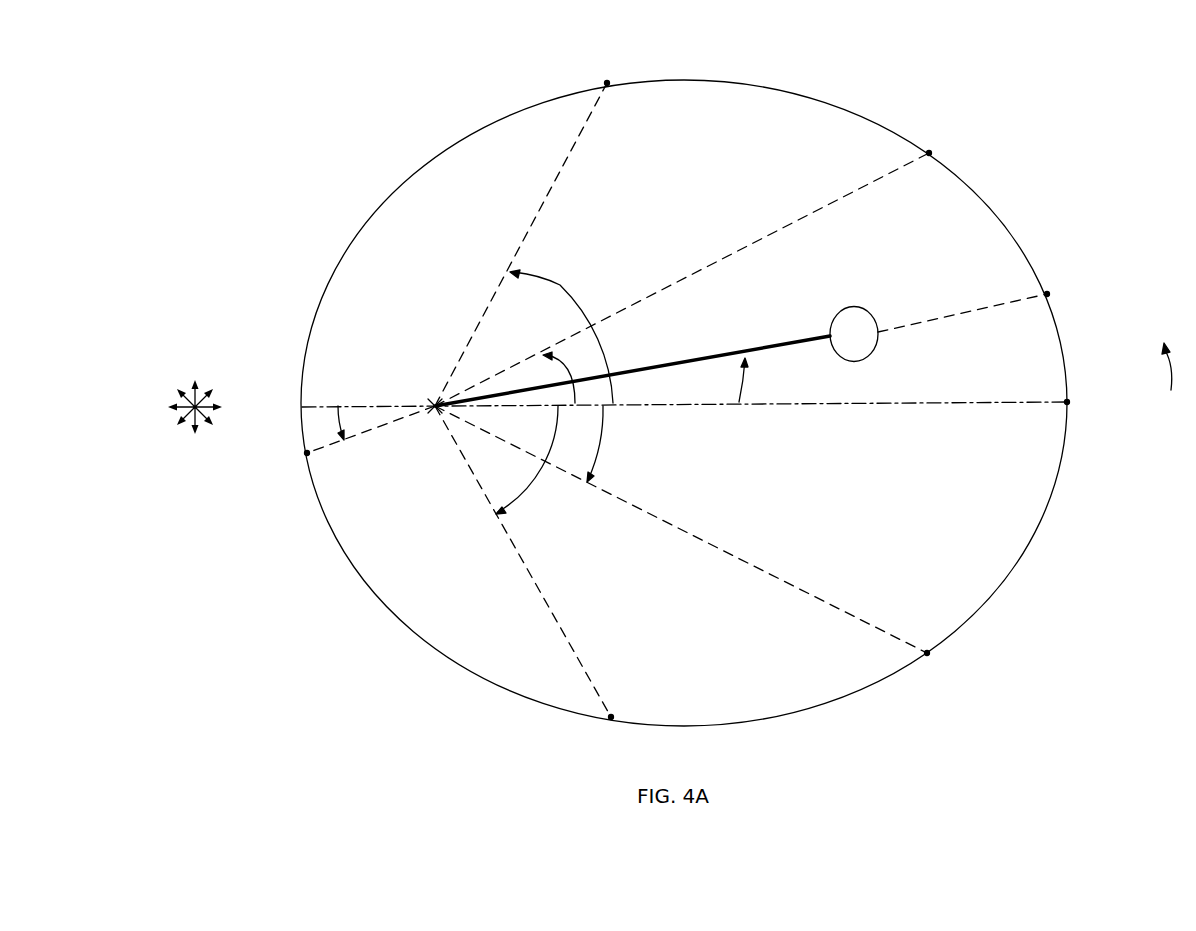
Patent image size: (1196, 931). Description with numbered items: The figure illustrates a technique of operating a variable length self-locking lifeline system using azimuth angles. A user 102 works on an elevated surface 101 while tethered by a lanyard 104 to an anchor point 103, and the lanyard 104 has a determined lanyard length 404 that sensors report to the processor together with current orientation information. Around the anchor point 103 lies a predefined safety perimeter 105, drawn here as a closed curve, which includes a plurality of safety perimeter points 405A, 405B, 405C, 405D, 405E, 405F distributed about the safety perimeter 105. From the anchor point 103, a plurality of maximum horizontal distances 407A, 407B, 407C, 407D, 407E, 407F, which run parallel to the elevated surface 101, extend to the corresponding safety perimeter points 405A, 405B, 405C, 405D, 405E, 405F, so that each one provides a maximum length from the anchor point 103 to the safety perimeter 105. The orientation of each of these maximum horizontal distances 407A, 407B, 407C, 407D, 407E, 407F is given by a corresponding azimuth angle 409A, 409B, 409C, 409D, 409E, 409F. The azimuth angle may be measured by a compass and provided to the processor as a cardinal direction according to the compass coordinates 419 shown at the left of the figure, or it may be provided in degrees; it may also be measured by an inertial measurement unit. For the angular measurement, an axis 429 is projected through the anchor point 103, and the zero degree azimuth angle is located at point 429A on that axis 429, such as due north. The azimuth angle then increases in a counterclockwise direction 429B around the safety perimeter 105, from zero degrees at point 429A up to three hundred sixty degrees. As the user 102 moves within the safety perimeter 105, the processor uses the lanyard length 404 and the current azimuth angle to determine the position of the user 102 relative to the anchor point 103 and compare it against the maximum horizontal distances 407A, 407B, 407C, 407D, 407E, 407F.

The elevated surface 101 is at (435, 633).
The user 102 is at (853, 307).
The anchor point 103 is at (433, 403).
The lanyard 104 is at (632, 357).
The lanyard length 404 is at (705, 353).
The predefined safety perimeter 105 is at (1033, 540).
The safety perimeter point 405A is at (1047, 294).
The safety perimeter point 405B is at (930, 653).
The safety perimeter point 405C is at (611, 717).
The safety perimeter point 405D is at (307, 453).
The safety perimeter point 405E is at (607, 83).
The safety perimeter point 405F is at (929, 153).
The maximum horizontal distance 407A is at (952, 311).
The maximum horizontal distance 407B is at (740, 560).
The maximum horizontal distance 407C is at (550, 612).
The maximum horizontal distance 407D is at (373, 429).
The maximum horizontal distance 407E is at (538, 205).
The maximum horizontal distance 407F is at (712, 260).
The azimuth angle 409A is at (748, 379).
The azimuth angle 409B is at (602, 443).
The azimuth angle 409C is at (523, 508).
The azimuth angle 409D is at (325, 430).
The azimuth angle 409E is at (575, 293).
The azimuth angle 409F is at (553, 350).
The compass coordinates 419 is at (195, 380).
The axis 429 is at (1010, 390).
The zero degree azimuth point 429A is at (1067, 402).
The counterclockwise direction 429B is at (1156, 355).